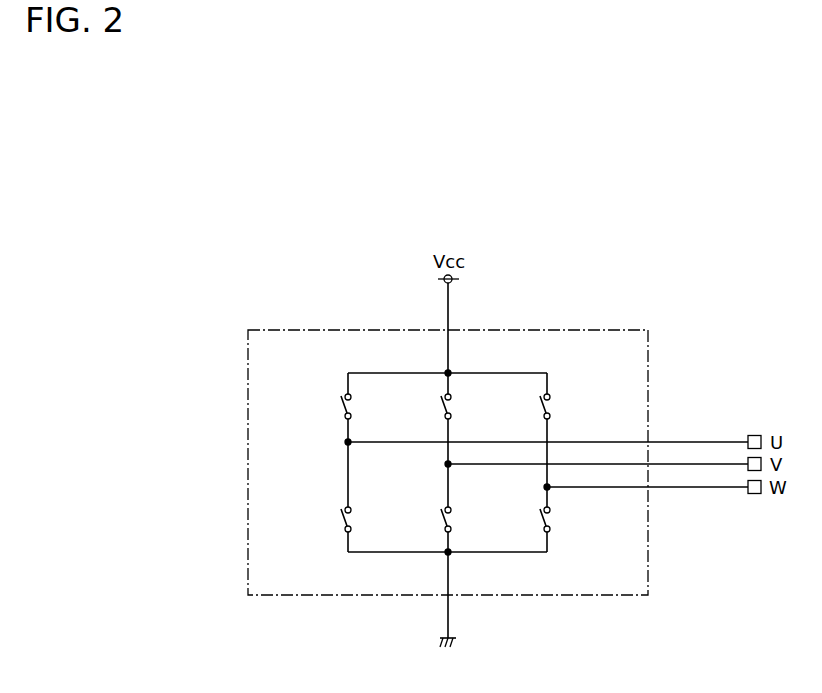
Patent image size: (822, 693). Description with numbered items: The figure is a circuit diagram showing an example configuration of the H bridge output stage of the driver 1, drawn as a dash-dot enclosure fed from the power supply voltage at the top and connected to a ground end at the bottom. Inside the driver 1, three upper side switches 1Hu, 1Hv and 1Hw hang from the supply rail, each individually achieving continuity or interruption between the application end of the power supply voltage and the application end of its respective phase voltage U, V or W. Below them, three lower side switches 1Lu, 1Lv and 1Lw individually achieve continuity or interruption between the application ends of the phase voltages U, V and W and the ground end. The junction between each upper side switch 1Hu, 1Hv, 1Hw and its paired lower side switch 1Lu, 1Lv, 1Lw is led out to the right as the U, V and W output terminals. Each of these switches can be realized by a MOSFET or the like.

The driver 1 is at (551, 330).
The upper side switch 1Hu is at (352, 407).
The upper side switch 1Hv is at (452, 407).
The upper side switch 1Hw is at (551, 407).
The lower side switch 1Lu is at (352, 520).
The lower side switch 1Lv is at (452, 520).
The lower side switch 1Lw is at (551, 520).